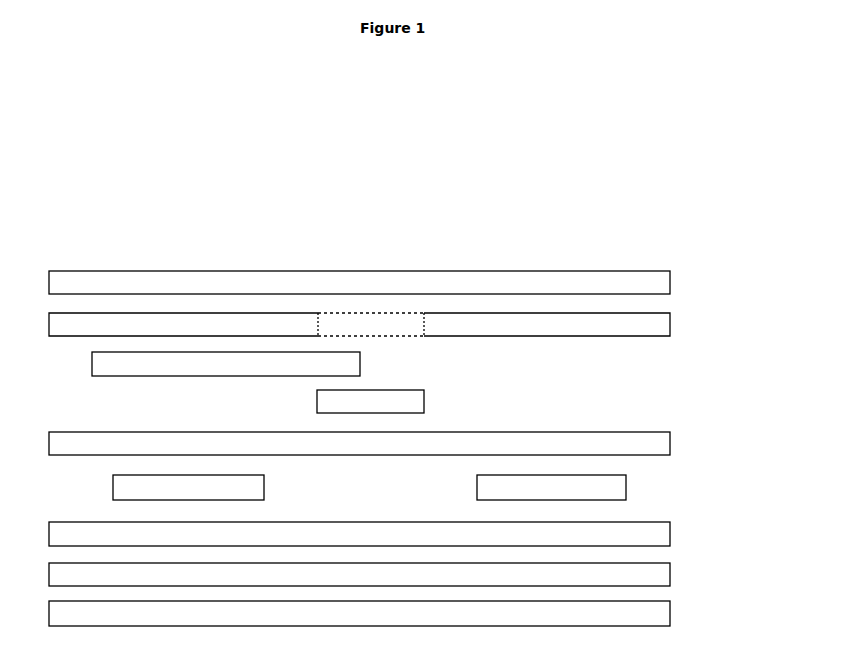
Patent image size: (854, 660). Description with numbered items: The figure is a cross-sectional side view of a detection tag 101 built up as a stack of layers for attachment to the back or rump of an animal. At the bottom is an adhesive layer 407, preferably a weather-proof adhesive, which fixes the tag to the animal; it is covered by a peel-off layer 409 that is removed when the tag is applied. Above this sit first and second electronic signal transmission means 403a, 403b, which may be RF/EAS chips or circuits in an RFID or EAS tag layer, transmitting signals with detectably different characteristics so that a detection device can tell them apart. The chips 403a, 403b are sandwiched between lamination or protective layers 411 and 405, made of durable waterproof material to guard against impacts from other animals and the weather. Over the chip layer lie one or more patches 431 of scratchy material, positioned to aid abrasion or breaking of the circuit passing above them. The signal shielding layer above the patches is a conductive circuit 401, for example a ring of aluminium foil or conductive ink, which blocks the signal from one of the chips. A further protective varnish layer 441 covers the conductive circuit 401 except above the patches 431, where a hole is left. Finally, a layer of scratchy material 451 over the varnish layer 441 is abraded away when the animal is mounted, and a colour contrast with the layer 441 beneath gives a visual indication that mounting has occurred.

The detection tag 101 is at (97, 212).
The layer of scratchy material 451 is at (670, 285).
The protective layer 441 is at (670, 323).
The conductive circuit 401 is at (92, 364).
The patches 431 is at (424, 401).
The protective layer 411 is at (670, 444).
The first electronic signal transmission means 403a is at (113, 488).
The second electronic signal transmission means 403b is at (626, 488).
The protective layer 405 is at (670, 534).
The adhesive layer 407 is at (670, 574).
The peel-off layer 409 is at (670, 612).